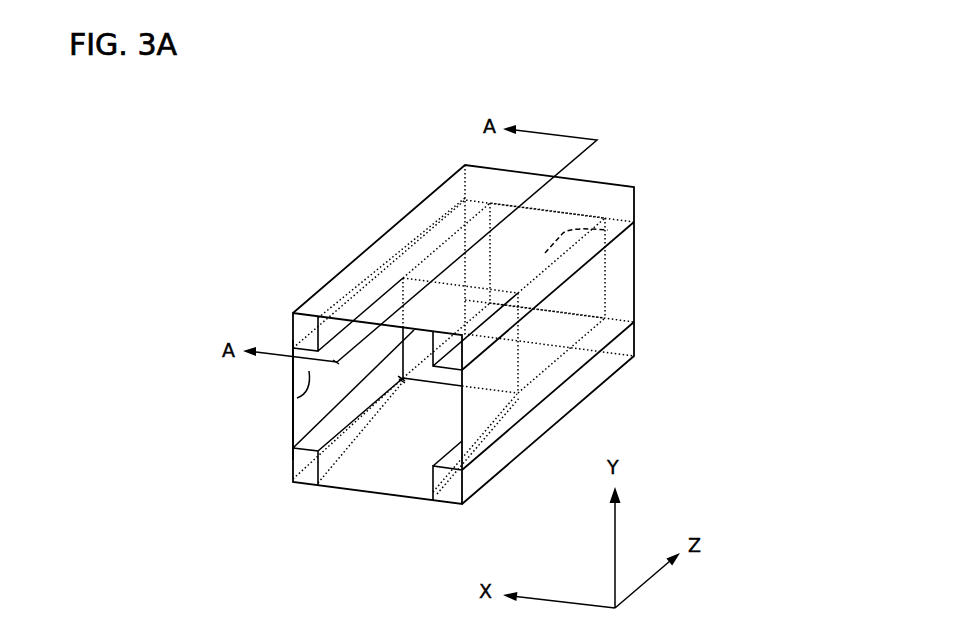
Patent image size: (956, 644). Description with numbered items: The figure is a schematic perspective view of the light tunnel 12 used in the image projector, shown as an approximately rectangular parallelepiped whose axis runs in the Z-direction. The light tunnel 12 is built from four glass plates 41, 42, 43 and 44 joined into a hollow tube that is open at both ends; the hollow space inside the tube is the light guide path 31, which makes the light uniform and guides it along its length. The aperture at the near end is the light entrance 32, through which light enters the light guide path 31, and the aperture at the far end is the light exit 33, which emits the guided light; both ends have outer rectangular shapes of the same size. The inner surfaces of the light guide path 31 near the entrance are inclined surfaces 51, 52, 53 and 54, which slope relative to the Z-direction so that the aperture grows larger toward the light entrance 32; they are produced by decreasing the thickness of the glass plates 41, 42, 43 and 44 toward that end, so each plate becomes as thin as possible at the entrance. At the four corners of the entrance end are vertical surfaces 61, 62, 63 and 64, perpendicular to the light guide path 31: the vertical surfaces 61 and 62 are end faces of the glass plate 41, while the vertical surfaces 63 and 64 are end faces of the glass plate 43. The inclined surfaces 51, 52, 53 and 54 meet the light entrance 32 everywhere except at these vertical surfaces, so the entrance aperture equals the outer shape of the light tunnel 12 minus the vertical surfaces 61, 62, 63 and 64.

The light tunnel 12 is at (473, 93).
The light guide path 31 is at (402, 378).
The light entrance 32 is at (402, 378).
The light exit 33 is at (602, 218).
The glass plate 41 is at (602, 399).
The glass plate 42 is at (640, 278).
The glass plate 43 is at (373, 235).
The glass plate 44 is at (286, 386).
The inclined surface 51 is at (402, 467).
The inclined surface 52 is at (475, 402).
The inclined surface 53 is at (402, 378).
The inclined surface 54 is at (335, 362).
The vertical surface 61 is at (297, 486).
The vertical surface 62 is at (452, 487).
The vertical surface 63 is at (462, 385).
The vertical surface 64 is at (303, 328).